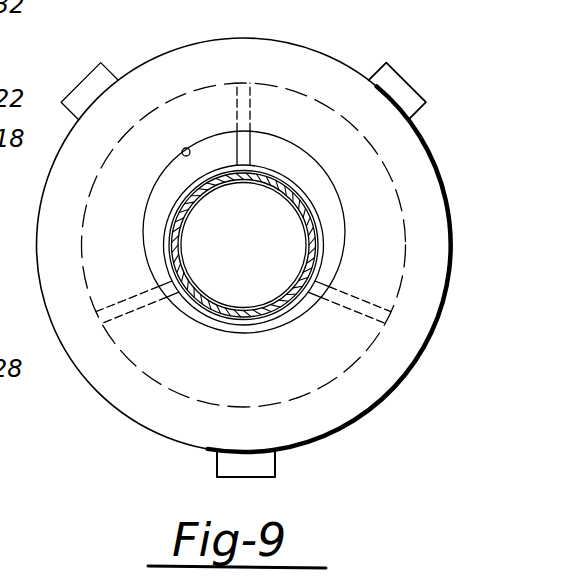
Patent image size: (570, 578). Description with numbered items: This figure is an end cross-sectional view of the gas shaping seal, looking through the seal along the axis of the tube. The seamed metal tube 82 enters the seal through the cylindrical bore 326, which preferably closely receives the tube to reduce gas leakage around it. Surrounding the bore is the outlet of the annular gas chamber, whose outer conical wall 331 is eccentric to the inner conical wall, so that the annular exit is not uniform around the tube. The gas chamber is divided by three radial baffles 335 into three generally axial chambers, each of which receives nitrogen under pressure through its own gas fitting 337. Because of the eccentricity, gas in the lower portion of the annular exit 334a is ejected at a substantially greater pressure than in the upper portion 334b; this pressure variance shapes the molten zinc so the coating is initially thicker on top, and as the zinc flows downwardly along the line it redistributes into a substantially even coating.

The seamed metal tube 82 is at (215, 181).
The cylindrical bore 326 is at (312, 262).
The outer conical wall 331 is at (180, 153).
The lower portion of the annular exit 334a is at (318, 309).
The upper portion of the annular exit 334b is at (328, 206).
The radial baffles 335 is at (130, 316).
The gas fitting 337 is at (94, 76).